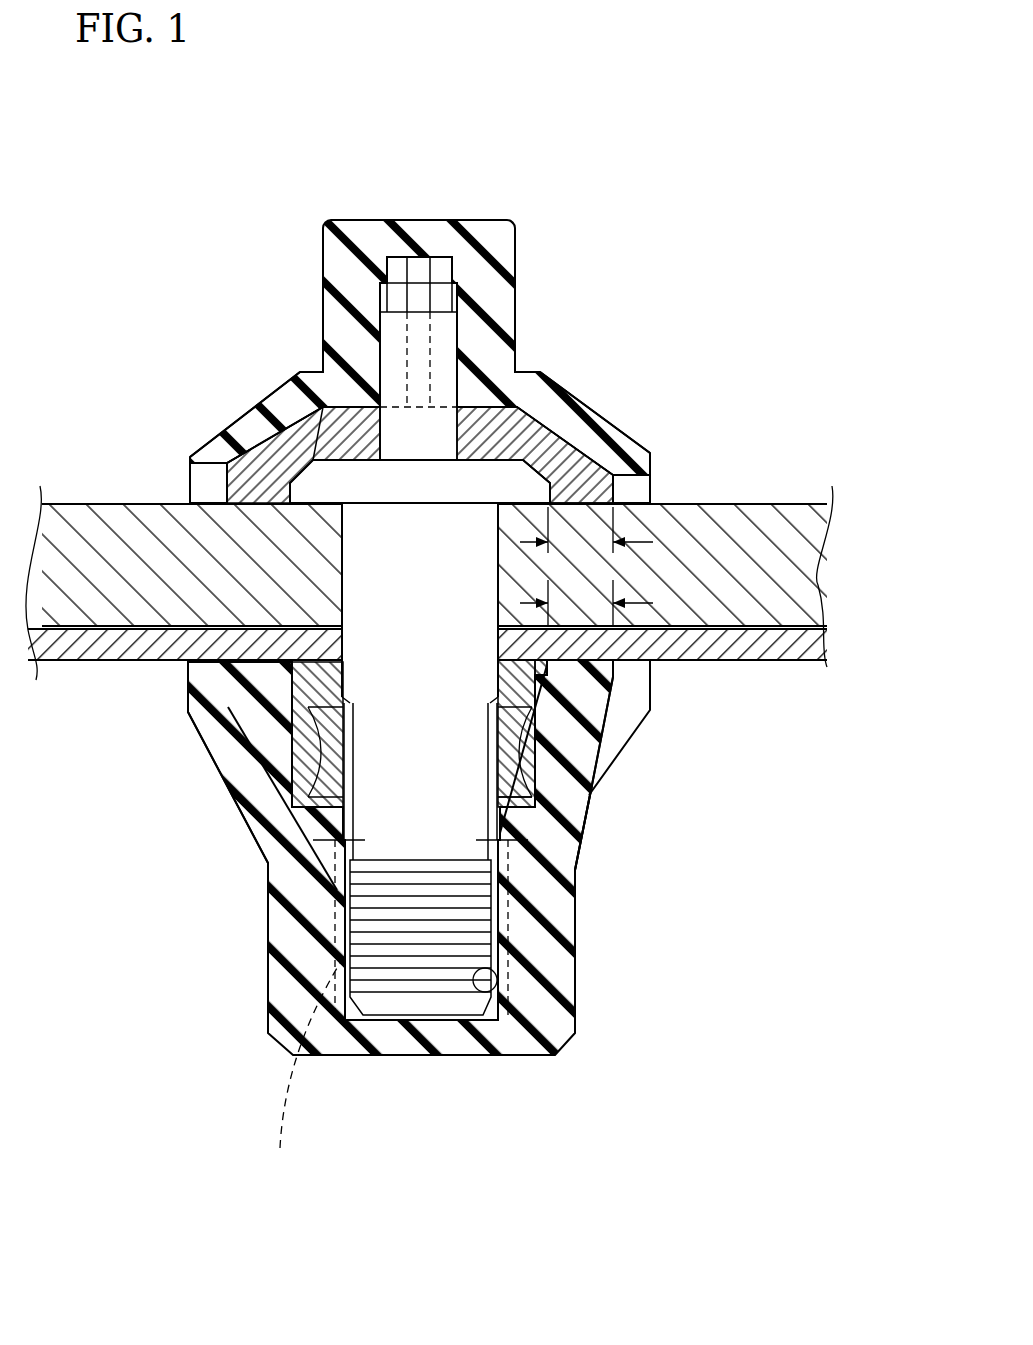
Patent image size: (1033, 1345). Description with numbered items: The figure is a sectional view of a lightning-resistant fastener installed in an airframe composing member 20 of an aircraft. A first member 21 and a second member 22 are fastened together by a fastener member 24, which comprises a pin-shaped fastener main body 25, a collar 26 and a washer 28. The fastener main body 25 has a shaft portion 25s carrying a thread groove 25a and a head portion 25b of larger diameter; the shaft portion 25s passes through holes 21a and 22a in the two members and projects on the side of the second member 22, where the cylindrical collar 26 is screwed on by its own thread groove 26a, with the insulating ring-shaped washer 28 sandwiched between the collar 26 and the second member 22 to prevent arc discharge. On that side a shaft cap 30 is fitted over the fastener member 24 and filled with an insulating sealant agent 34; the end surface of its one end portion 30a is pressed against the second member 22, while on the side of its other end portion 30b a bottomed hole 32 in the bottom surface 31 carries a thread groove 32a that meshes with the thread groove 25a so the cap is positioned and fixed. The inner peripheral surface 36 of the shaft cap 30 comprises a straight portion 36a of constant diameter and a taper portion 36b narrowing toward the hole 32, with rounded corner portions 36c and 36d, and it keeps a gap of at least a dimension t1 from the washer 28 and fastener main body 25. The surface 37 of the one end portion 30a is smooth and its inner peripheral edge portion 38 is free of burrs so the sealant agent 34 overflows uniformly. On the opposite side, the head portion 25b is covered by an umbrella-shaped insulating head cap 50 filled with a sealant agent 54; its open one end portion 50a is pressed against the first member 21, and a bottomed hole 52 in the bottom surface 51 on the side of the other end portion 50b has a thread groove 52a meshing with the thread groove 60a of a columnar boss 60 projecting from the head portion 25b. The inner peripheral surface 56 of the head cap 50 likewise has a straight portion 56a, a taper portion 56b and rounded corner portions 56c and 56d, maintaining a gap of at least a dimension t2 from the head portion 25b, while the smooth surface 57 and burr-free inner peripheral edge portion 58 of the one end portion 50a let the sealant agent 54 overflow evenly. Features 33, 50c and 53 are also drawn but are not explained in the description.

The airframe composing member 20 is at (747, 500).
The first member 21 is at (812, 503).
The hole 21a is at (342, 540).
The second member 22 is at (827, 667).
The hole 22a is at (342, 663).
The fastener member 24 is at (543, 462).
The fastener main body 25 is at (272, 880).
The thread groove 25a is at (515, 840).
The head portion 25b is at (230, 455).
The shaft portion 25s is at (577, 890).
The collar 26 is at (330, 730).
The thread groove 26a is at (540, 805).
The washer 28 is at (252, 700).
The shaft cap 30 is at (562, 1048).
The one end portion 30a is at (200, 664).
The other end portion 30b is at (470, 1057).
The bottom surface 31 is at (338, 843).
The bottomed hole 32 is at (373, 1007).
The thread groove 32a is at (497, 983).
The hidden contour 33 is at (302, 1069).
The sealant agent 34 is at (540, 760).
The inner peripheral surface 36 is at (597, 773).
The straight portion 36a is at (607, 683).
The taper portion 36b is at (583, 838).
The corner portion 36c is at (625, 725).
The corner portion 36d is at (573, 855).
The surface 37 is at (622, 650).
The inner peripheral edge portion 38 is at (195, 640).
The head cap 50 is at (508, 270).
The one end portion 50a is at (215, 478).
The other end portion 50b is at (393, 221).
The side surface of cap 50c is at (323, 240).
The bottom surface 51 is at (487, 375).
The bottomed hole 52 is at (440, 320).
The thread groove 52a is at (383, 325).
The seat portion 53 is at (420, 483).
The sealant agent 54 is at (318, 440).
The inner peripheral surface 56 is at (262, 462).
The straight portion 56a is at (600, 492).
The taper portion 56b is at (597, 420).
The corner portion 56c is at (630, 445).
The corner portion 56d is at (545, 440).
The surface 57 is at (640, 512).
The inner peripheral edge portion 58 is at (192, 512).
The boss 60 is at (465, 335).
The thread groove 60a is at (372, 325).
The predetermined dimension t1 is at (586, 594).
The predetermined dimension t2 is at (586, 528).